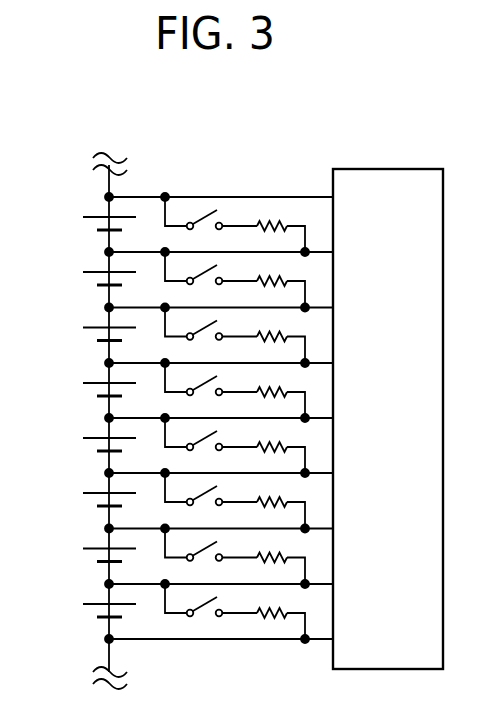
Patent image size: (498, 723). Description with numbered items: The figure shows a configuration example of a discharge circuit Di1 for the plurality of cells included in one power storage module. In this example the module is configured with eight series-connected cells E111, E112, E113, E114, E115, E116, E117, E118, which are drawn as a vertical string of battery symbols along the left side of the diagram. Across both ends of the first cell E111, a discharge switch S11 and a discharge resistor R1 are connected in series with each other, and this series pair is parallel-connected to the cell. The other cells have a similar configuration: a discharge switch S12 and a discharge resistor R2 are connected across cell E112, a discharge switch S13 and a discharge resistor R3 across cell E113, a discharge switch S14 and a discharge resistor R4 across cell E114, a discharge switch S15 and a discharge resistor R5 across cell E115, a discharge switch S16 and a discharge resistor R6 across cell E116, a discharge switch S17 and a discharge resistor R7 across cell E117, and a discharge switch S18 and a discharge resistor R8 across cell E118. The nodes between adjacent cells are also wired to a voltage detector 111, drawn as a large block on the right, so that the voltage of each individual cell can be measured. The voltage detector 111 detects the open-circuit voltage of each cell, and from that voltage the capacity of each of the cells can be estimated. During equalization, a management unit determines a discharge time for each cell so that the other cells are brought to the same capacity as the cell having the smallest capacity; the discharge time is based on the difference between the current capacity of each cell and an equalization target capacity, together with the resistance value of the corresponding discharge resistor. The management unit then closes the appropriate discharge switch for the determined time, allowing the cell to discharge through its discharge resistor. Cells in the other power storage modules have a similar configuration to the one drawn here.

The voltage detector 111 is at (410, 169).
The discharge circuit Di1 is at (242, 180).
The cell E111 is at (83, 222).
The cell E112 is at (83, 278).
The cell E113 is at (83, 334).
The cell E114 is at (83, 388).
The cell E115 is at (83, 443).
The cell E116 is at (83, 499).
The cell E117 is at (83, 555).
The cell E118 is at (83, 609).
The discharge switch S11 is at (205, 232).
The discharge switch S12 is at (205, 287).
The discharge switch S13 is at (205, 343).
The discharge switch S14 is at (205, 398).
The discharge switch S15 is at (205, 453).
The discharge switch S16 is at (205, 508).
The discharge switch S17 is at (205, 564).
The discharge switch S18 is at (205, 619).
The discharge resistor R1 is at (272, 237).
The discharge resistor R2 is at (272, 292).
The discharge resistor R3 is at (272, 348).
The discharge resistor R4 is at (272, 403).
The discharge resistor R5 is at (272, 458).
The discharge resistor R6 is at (272, 513).
The discharge resistor R7 is at (272, 569).
The discharge resistor R8 is at (272, 624).